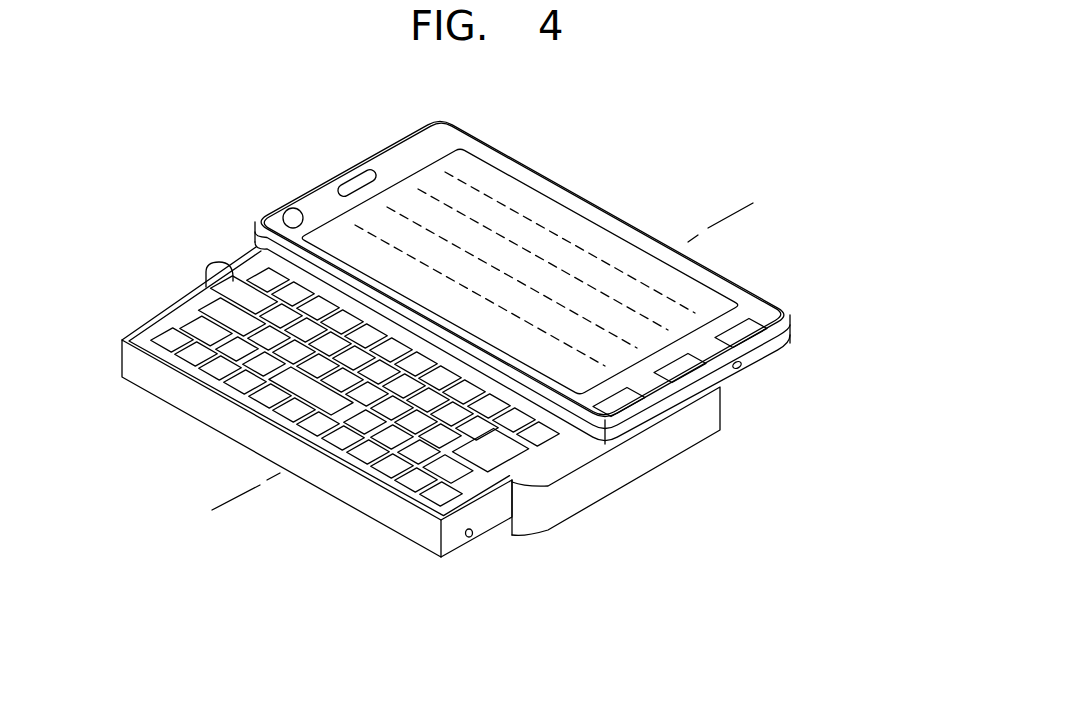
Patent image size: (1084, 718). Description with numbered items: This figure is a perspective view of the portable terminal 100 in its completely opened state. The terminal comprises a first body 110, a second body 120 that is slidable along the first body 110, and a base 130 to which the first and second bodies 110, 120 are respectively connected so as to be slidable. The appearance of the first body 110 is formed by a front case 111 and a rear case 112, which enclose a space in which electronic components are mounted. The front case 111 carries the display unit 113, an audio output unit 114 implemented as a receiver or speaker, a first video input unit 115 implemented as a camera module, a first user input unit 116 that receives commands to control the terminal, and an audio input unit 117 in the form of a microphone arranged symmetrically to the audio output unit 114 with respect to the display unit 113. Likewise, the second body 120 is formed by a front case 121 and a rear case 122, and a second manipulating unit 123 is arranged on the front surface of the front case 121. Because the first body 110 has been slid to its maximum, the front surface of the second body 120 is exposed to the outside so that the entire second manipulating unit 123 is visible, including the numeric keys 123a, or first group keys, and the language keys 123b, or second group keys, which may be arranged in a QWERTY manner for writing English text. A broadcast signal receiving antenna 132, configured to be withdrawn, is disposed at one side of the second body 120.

The portable terminal 100 is at (203, 450).
The first body 110 is at (608, 207).
The front case 111 is at (790, 323).
The rear case 112 is at (790, 342).
The display unit 113 is at (553, 213).
The audio output unit 114 is at (354, 181).
The first video input unit 115 is at (291, 214).
The first user input unit 116 is at (750, 323).
The audio input unit 117 is at (740, 370).
The second body 120 is at (367, 520).
The front case 121 is at (498, 497).
The rear case 122 is at (492, 520).
The second manipulating unit 123 is at (180, 325).
The numeric keys 123a is at (165, 323).
The language keys 123b is at (213, 265).
The base 130 is at (610, 475).
The broadcast signal receiving antenna 132 is at (470, 537).